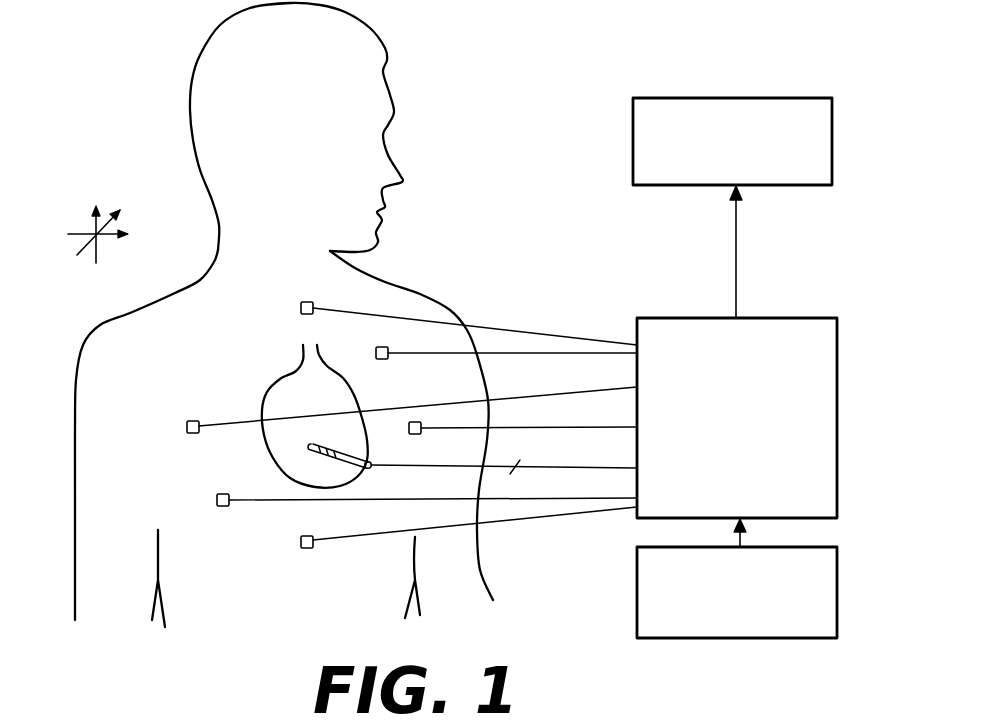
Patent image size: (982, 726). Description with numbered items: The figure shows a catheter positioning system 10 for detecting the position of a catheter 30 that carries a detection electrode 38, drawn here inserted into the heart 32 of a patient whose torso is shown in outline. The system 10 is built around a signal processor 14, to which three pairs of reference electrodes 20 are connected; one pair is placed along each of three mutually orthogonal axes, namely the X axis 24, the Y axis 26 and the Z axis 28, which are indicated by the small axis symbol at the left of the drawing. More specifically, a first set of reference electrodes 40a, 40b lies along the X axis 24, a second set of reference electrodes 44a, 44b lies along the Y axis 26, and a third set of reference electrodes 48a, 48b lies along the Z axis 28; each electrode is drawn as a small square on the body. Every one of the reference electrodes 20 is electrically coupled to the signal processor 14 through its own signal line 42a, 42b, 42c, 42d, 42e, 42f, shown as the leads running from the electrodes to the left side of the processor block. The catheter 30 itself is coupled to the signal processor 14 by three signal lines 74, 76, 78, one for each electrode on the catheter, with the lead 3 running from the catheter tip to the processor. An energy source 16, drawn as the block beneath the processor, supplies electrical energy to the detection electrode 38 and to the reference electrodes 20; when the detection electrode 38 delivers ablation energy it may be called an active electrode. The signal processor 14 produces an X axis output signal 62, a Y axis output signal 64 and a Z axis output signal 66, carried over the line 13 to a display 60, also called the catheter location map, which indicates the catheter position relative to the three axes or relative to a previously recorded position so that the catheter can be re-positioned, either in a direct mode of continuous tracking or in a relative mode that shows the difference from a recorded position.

The catheter positioning system 10 is at (733, 38).
The signal lines 13 is at (796, 252).
The signal processor 14 is at (775, 318).
The energy source 16 is at (805, 547).
The reference electrodes 20 is at (438, 283).
The X axis 24 is at (110, 238).
The Y axis 26 is at (92, 218).
The Z axis 28 is at (113, 218).
The catheter 30 is at (342, 441).
The heart 32 is at (280, 373).
The detection electrode 38 is at (311, 448).
The lead 3 is at (508, 461).
The first set of reference electrodes 40a is at (197, 411).
The first set of reference electrodes 40b is at (410, 435).
The second set of reference electrodes 44a is at (311, 290).
The second set of reference electrodes 44b is at (309, 548).
The third set of reference electrodes 48a is at (224, 493).
The third set of reference electrodes 48b is at (384, 347).
The signal line 42a is at (571, 394).
The signal line 42b is at (552, 427).
The signal line 42c is at (537, 334).
The signal line 42d is at (541, 521).
The signal line 42e is at (554, 359).
The signal line 42f is at (509, 497).
The display 60 is at (685, 98).
The X axis output signal 62 is at (796, 252).
The Y axis output signal 64 is at (796, 252).
The Z axis output signal 66 is at (736, 222).
The signal line 74 is at (504, 449).
The signal line 76 is at (504, 449).
The signal line 78 is at (577, 468).